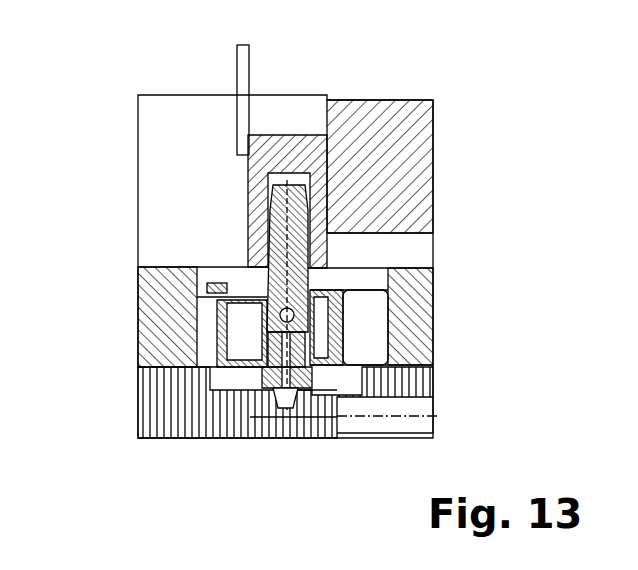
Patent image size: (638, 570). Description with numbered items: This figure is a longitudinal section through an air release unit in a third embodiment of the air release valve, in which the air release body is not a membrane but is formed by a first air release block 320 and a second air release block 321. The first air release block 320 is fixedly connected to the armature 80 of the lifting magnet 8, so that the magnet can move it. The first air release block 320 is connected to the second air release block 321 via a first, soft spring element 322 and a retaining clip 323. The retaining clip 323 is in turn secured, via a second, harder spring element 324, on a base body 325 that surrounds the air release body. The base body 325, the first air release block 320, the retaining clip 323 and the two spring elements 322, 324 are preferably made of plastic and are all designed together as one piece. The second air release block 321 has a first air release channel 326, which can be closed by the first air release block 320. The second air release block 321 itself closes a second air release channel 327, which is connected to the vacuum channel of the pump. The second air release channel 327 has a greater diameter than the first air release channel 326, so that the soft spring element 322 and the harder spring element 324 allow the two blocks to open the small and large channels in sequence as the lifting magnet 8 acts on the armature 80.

The lifting magnet 8 is at (267, 157).
The armature 80 is at (267, 223).
The first air release block 320 is at (217, 330).
The second air release block 321 is at (262, 387).
The first, soft spring element 322 is at (207, 293).
The retaining clip 323 is at (137, 370).
The second, harder spring element 324 is at (366, 289).
The base body 325 is at (415, 325).
The first air release channel 326 is at (265, 358).
The second air release channel 327 is at (283, 415).